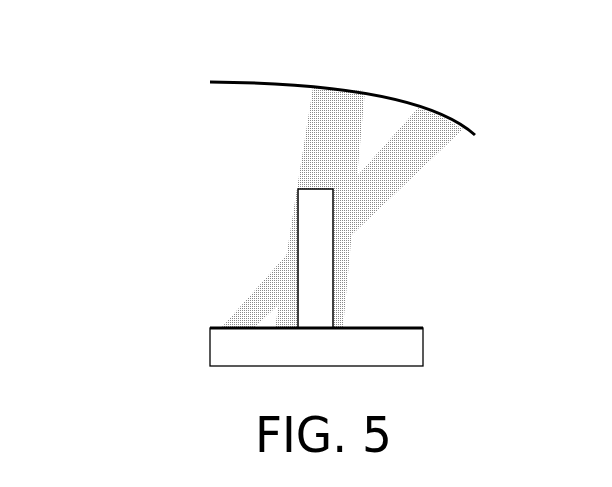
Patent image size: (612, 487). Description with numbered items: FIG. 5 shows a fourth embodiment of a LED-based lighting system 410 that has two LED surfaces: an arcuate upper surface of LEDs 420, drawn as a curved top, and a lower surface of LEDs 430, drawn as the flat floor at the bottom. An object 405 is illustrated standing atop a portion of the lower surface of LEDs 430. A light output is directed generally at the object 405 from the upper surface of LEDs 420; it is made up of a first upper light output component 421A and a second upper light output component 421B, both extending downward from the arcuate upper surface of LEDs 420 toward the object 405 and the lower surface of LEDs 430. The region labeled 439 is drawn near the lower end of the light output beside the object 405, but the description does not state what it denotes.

The LED-based lighting system 410 is at (104, 82).
The arcuate upper surface of LEDs 420 is at (490, 123).
The first upper light output component 421A is at (305, 137).
The second upper light output component 421B is at (395, 163).
The object 405 is at (313, 227).
The floor illumination region 439 is at (258, 298).
The lower surface of LEDs 430 is at (450, 326).